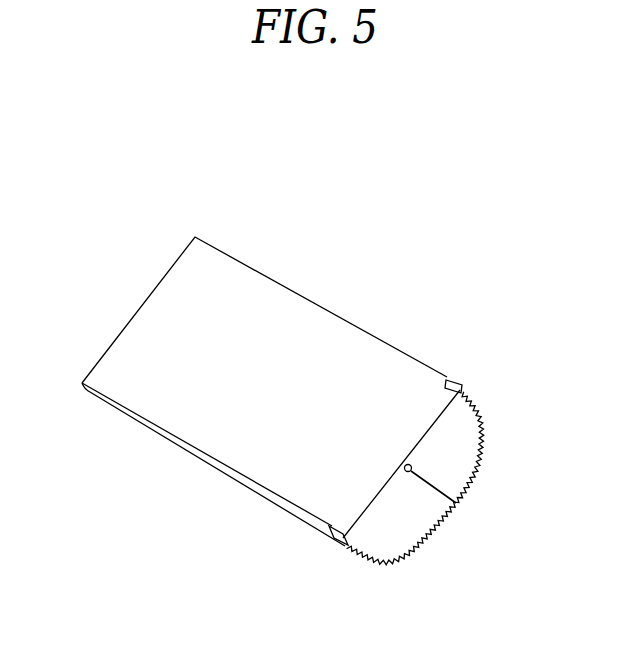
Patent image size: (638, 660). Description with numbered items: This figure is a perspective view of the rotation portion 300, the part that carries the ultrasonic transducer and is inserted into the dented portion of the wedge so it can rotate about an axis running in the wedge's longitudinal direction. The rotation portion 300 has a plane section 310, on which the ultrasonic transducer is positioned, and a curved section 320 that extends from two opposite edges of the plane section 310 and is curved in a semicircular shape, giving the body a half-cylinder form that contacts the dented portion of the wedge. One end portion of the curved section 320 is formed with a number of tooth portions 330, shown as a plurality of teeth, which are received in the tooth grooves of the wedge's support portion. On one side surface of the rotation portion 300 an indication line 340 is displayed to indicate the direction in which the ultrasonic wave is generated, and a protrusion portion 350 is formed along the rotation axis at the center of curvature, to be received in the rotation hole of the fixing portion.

The rotation portion 300 is at (326, 172).
The plane section 310 is at (142, 330).
The curved section 320 is at (157, 435).
The tooth portions 330 is at (342, 546).
The indication line 340 is at (439, 490).
The protrusion portion 350 is at (406, 463).